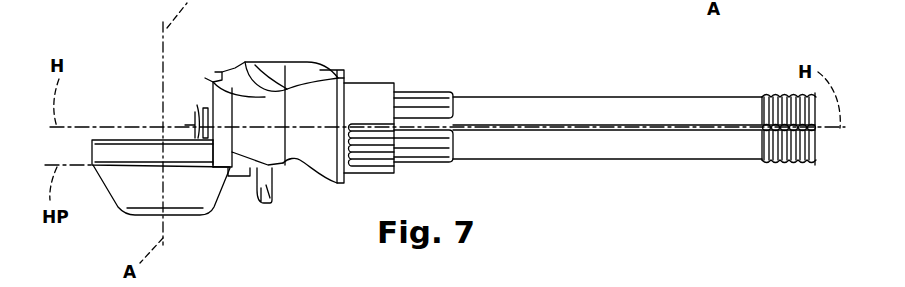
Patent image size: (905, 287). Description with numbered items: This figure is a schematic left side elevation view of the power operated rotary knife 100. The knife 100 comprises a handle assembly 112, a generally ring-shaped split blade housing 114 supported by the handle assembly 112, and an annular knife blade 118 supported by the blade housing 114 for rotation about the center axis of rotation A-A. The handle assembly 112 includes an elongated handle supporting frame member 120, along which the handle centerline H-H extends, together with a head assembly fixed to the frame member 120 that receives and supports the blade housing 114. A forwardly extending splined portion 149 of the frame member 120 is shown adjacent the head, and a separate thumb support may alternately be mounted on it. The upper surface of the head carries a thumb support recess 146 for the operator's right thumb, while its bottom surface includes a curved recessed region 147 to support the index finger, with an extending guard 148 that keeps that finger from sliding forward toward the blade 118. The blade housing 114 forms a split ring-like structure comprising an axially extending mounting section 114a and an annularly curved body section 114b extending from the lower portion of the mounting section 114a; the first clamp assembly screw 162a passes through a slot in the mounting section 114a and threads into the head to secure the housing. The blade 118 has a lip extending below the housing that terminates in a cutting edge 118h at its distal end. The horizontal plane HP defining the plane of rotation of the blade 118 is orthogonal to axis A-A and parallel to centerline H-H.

The power operated rotary knife 100 is at (488, 64).
The handle assembly 112 is at (413, 82).
The split blade housing 114 is at (150, 138).
The mounting section 114a is at (206, 123).
The annularly curved body section 114b is at (108, 150).
The annular knife blade 118 is at (105, 197).
The cutting edge 118h is at (177, 220).
The handle supporting frame member 120 is at (540, 150).
The thumb support recess 146 is at (270, 75).
The curved recessed region 147 is at (313, 170).
The extending guard 148 is at (262, 185).
The splined portion 149 is at (367, 158).
The first clamp assembly screw 162a is at (205, 126).